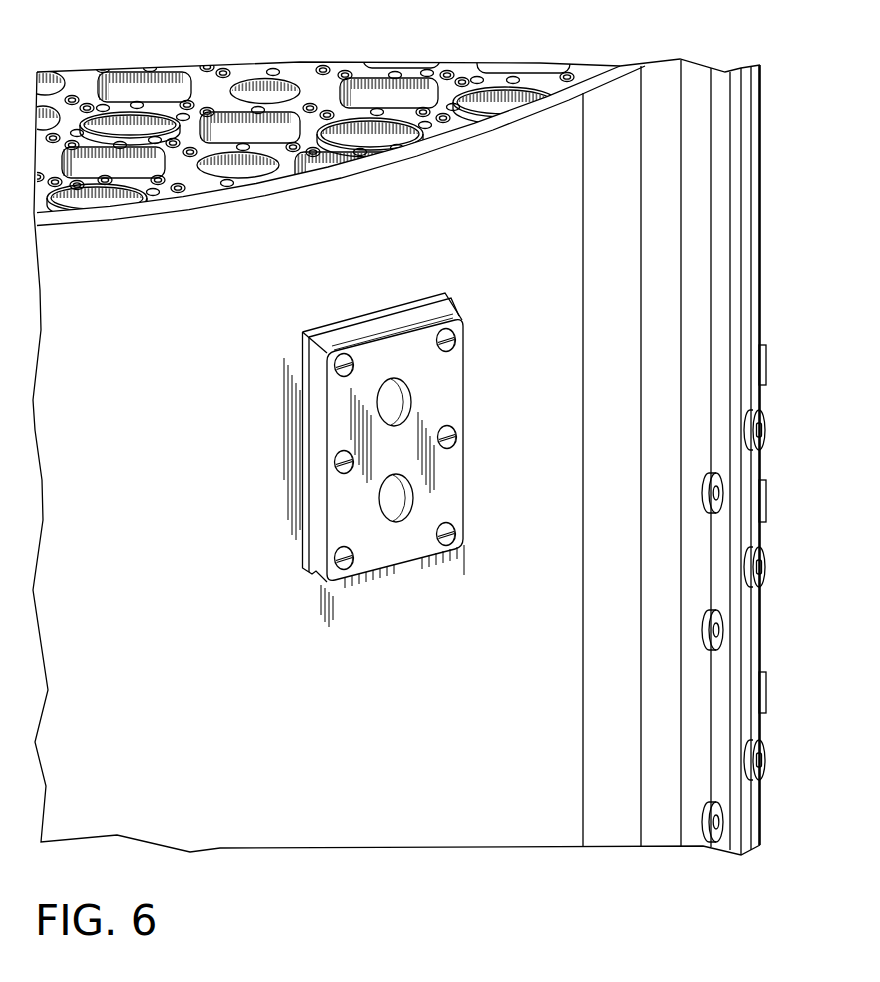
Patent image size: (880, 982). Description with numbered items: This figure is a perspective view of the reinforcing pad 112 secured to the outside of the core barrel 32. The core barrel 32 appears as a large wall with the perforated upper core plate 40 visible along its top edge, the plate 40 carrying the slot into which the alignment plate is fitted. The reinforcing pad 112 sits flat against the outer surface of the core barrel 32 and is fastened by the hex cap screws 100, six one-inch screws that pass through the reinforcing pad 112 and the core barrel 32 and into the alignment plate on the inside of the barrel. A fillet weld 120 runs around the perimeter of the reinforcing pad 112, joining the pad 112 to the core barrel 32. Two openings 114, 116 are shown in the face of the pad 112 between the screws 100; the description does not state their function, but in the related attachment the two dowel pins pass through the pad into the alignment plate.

The upper core plate 40 is at (303, 75).
The core barrel 32 is at (180, 395).
The fillet weld 120 is at (348, 317).
The reinforcing pad 112 is at (407, 572).
The upper opening 114 is at (405, 405).
The lower opening 116 is at (407, 505).
The hex cap screws 100 is at (453, 342).